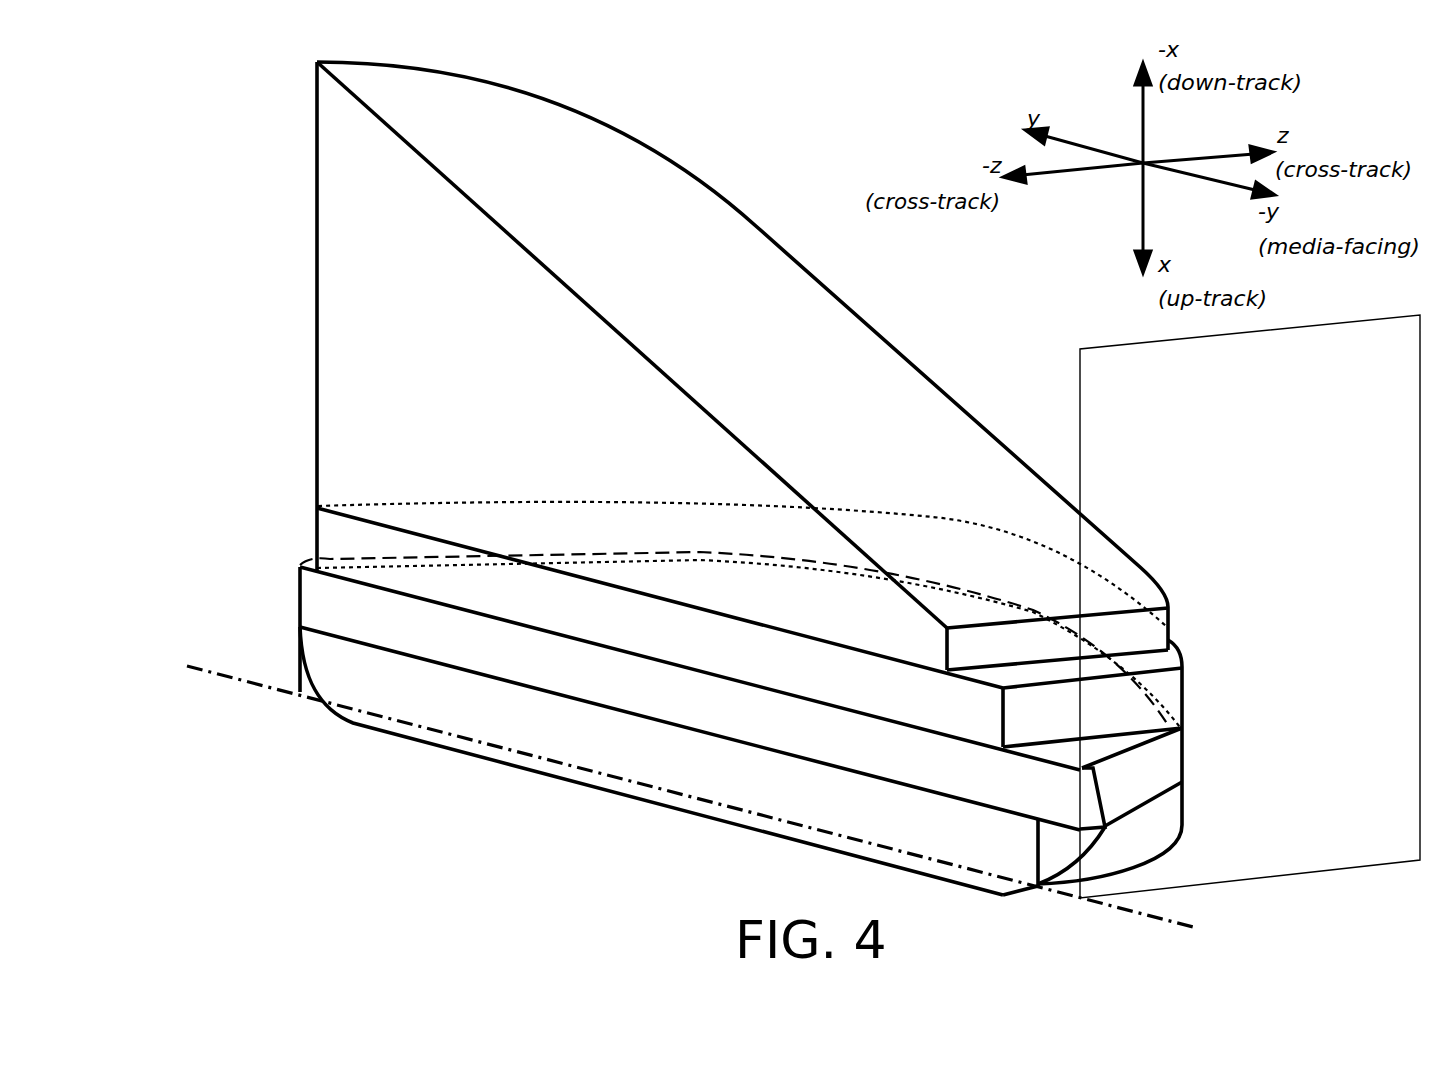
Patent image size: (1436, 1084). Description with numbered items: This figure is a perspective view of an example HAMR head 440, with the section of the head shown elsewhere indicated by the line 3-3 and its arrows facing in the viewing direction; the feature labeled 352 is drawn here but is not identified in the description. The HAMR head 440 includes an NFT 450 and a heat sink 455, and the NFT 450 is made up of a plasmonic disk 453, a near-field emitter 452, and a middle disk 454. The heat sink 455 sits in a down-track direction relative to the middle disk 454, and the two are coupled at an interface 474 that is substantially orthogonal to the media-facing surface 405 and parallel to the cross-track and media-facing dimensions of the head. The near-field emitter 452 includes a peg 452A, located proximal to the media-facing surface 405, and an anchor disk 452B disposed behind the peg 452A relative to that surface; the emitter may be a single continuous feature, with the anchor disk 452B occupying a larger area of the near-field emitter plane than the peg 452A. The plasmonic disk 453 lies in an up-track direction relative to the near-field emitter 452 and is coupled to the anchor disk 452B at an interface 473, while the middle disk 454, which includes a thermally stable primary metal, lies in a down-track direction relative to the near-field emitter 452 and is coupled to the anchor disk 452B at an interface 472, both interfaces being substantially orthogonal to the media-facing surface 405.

The HAMR head 440 is at (765, 142).
The media-facing surface 405 is at (1386, 377).
The heat sink 455 is at (546, 418).
The middle disk 454 is at (677, 645).
The plasmonic disk 453 is at (678, 767).
The near-field emitter 452 is at (1195, 760).
The peg 452A is at (1090, 806).
The anchor disk 452B is at (312, 603).
The interface 472 is at (443, 585).
The interface 473 is at (490, 677).
The interface 474 is at (557, 528).
The slider body 352 is at (458, 755).
The NFT 450 is at (1322, 708).
The section line 3- 3 is at (150, 682).